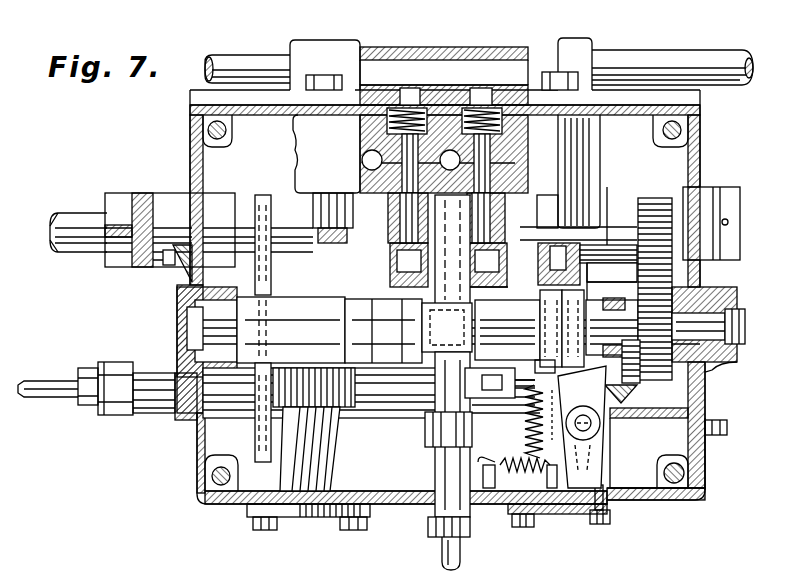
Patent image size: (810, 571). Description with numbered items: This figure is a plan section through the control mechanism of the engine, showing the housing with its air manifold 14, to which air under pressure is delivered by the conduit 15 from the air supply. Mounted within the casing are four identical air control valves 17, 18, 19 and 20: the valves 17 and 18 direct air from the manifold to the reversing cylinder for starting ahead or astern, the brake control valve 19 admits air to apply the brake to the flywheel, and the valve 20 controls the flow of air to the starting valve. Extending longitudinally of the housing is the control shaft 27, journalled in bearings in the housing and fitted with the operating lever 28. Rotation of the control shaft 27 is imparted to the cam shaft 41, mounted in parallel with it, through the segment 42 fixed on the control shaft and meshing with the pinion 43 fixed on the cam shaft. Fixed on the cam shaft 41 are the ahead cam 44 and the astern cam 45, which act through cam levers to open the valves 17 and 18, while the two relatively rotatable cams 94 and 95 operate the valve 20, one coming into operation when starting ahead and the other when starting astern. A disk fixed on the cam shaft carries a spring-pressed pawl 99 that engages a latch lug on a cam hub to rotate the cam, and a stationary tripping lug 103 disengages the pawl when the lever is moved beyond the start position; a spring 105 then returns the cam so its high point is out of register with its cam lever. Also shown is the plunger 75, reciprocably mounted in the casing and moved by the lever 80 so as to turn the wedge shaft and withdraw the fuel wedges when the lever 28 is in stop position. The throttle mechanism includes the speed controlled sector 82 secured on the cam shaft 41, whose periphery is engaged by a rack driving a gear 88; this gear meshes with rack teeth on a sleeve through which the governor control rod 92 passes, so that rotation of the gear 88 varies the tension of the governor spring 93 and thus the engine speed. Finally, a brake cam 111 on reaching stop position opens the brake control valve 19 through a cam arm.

The air manifold 14 is at (508, 47).
The conduit 15 is at (645, 62).
The air control valve 17 is at (325, 141).
The air control valve 18 is at (393, 215).
The brake control valve 19 is at (508, 225).
The air control valve 20 is at (558, 148).
The control shaft 27 is at (288, 212).
The operating lever 28 is at (140, 258).
The cam shaft 41 is at (215, 327).
The segment 42 is at (672, 192).
The pinion 43 is at (707, 373).
The ahead cam 44 is at (334, 311).
The astern cam 45 is at (402, 311).
The plunger 75 is at (462, 553).
The lever 80 is at (438, 435).
The speed controlled sector 82 is at (255, 440).
The gear 88 is at (345, 412).
The governor control rod 92 is at (42, 393).
The governor spring 93 is at (645, 387).
The cam 94 is at (553, 307).
The cam 95 is at (572, 314).
The pawl 99 is at (615, 325).
The tripping lug 103 is at (630, 403).
The spring 105 is at (558, 390).
The brake cam 111 is at (504, 286).